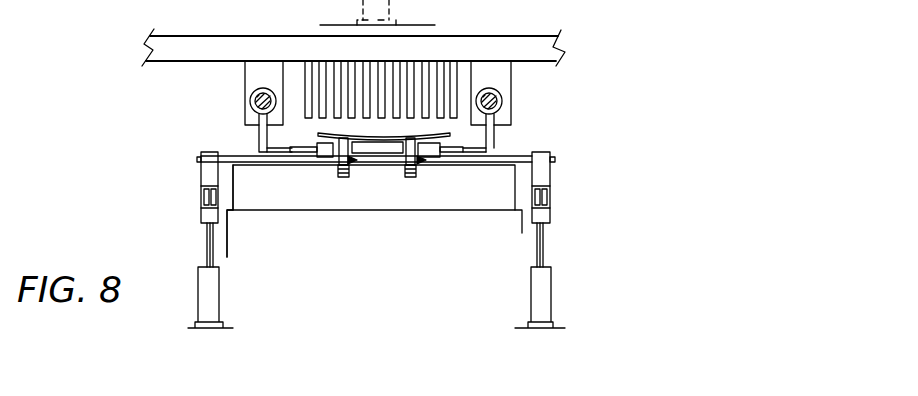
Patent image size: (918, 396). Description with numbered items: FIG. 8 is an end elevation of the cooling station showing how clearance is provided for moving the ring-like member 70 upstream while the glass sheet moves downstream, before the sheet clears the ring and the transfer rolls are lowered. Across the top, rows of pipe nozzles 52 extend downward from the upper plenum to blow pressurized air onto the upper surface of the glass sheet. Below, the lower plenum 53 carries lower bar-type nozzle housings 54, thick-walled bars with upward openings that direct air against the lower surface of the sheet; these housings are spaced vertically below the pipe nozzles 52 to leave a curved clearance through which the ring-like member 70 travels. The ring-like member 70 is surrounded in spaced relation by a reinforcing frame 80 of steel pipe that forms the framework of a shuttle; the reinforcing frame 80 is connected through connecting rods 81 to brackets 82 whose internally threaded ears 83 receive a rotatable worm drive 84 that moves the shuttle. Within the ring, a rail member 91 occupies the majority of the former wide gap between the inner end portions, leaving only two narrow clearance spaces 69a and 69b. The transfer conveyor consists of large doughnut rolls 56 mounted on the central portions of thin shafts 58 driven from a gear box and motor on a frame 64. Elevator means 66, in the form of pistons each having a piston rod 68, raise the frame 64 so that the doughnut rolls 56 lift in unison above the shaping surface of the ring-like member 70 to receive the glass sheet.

The pipe nozzles 52 is at (305, 70).
The lower plenum 53 is at (493, 275).
The lower bar-type nozzle housings 54 is at (262, 210).
The doughnut rolls 56 is at (344, 178).
The thin shafts 58 is at (512, 157).
The frame 64 is at (551, 191).
The elevator means 66 is at (551, 283).
The piston rod 68 is at (544, 238).
The narrow clearance space 69a is at (408, 177).
The narrow clearance space 69b is at (341, 177).
The ring-like member 70 is at (329, 151).
The reinforcing frame 80 is at (305, 150).
The connecting rods 81 is at (277, 153).
The brackets 82 is at (258, 138).
The internally threaded ears 83 is at (250, 94).
The rotatable worm drive 84 is at (255, 104).
The rail member 91 is at (379, 150).